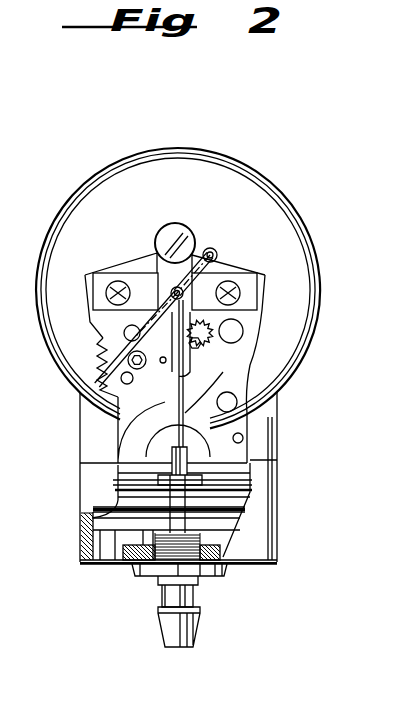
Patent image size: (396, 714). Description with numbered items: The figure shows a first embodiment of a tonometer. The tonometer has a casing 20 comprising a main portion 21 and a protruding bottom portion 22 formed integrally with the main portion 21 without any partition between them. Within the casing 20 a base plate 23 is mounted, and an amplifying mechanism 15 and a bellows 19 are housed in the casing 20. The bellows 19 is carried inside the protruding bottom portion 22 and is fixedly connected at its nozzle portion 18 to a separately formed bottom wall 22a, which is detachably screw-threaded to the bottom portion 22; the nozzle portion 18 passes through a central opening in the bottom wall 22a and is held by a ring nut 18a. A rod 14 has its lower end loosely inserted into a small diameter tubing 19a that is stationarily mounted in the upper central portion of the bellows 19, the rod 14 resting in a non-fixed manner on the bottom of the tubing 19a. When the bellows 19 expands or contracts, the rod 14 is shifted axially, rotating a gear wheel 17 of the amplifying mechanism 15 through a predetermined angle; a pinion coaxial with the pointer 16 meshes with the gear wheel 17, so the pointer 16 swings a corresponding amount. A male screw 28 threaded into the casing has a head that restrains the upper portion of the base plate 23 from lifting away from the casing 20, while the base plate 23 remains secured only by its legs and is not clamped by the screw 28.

The rod 14 is at (190, 382).
The amplifying mechanism 15 is at (214, 362).
The pointer 16 is at (150, 265).
The gear wheel 17 is at (110, 388).
The nozzle portion 18 is at (195, 627).
The ring nut 18a is at (223, 574).
The bellows 19 is at (235, 482).
The small diameter tubing 19a is at (185, 425).
The casing 20 is at (255, 158).
The casing main portion 21 is at (283, 193).
The protruding bottom portion 22 is at (277, 528).
The bottom wall 22a is at (280, 563).
The base plate 23 is at (260, 288).
The male screw 28 is at (173, 232).